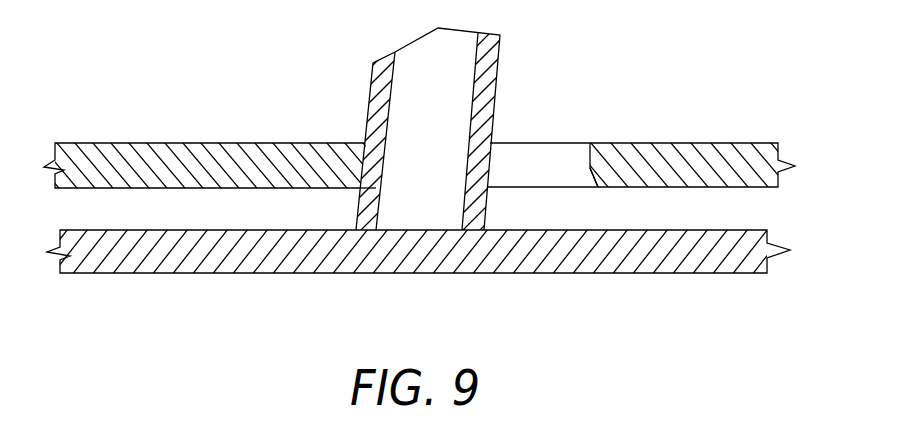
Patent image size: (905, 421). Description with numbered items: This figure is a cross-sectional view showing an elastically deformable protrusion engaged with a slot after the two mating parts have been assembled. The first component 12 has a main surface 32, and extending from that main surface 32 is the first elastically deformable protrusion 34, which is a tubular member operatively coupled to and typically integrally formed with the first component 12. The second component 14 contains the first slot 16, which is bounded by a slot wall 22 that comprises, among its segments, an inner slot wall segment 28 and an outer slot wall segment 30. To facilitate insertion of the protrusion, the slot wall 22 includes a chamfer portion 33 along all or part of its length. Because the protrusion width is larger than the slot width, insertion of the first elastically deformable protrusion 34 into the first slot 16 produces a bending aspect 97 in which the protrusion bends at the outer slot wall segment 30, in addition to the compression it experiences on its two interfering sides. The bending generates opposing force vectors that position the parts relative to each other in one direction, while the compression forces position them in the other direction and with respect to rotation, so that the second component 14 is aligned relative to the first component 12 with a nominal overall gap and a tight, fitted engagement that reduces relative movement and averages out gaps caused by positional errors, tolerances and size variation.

The first component 12 is at (650, 284).
The second component 14 is at (690, 134).
The first slot 16 is at (566, 144).
The slot wall 22 is at (437, 160).
The inner slot wall segment 28 is at (588, 167).
The outer slot wall segment 30 is at (370, 168).
The main surface 32 is at (142, 228).
The chamfer portion 33 is at (594, 185).
The first elastically deformable protrusion 34 is at (501, 72).
The bending aspect 97 is at (349, 135).